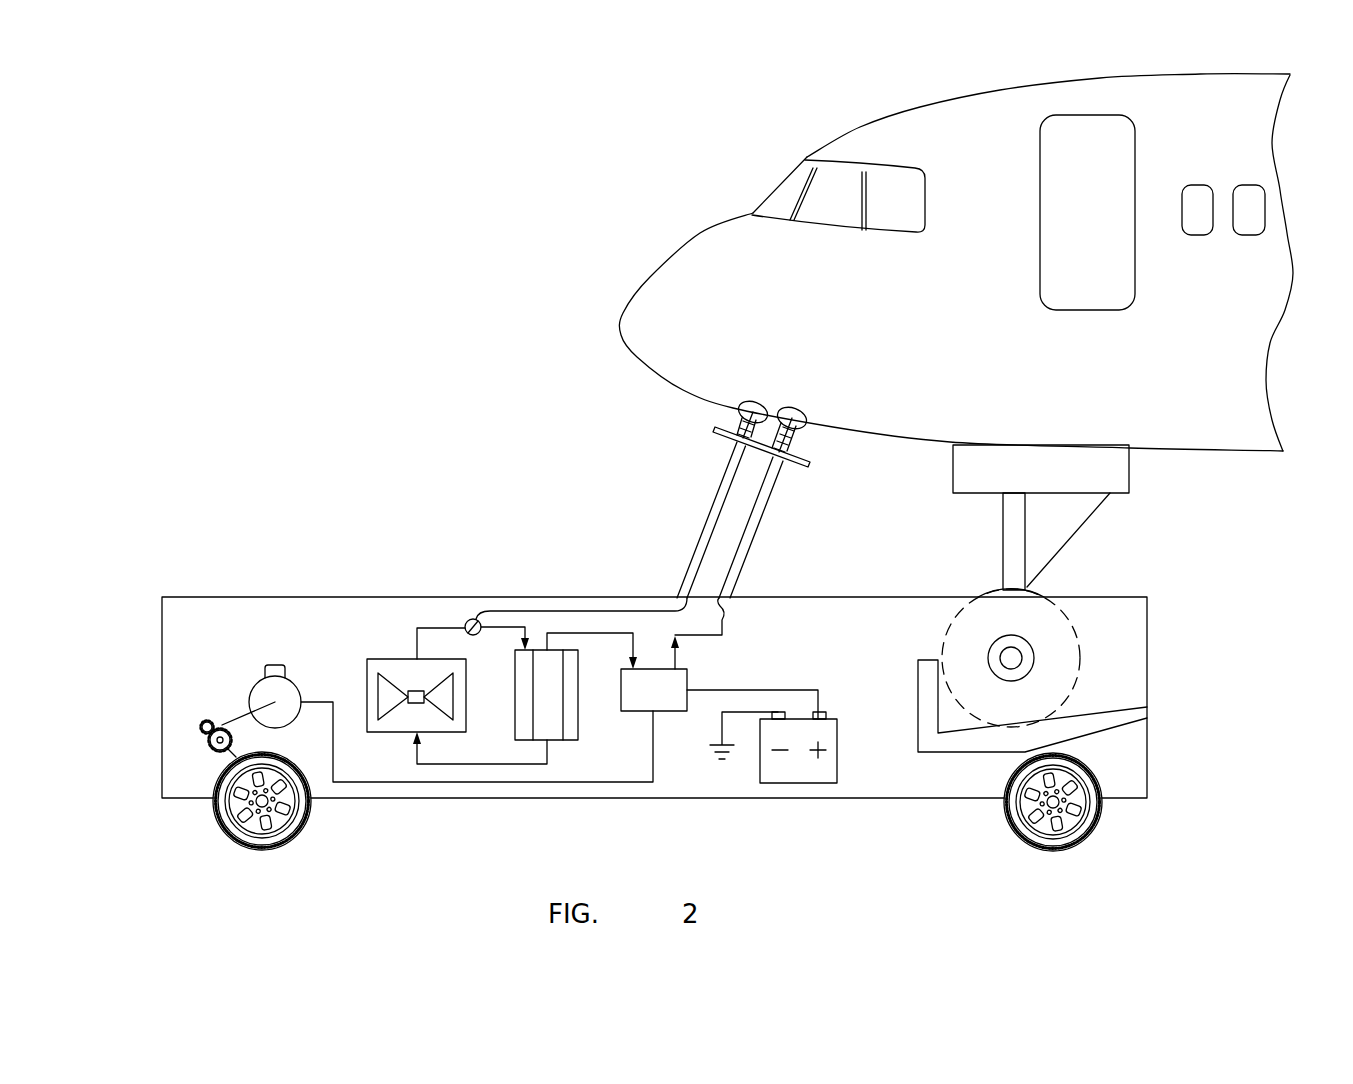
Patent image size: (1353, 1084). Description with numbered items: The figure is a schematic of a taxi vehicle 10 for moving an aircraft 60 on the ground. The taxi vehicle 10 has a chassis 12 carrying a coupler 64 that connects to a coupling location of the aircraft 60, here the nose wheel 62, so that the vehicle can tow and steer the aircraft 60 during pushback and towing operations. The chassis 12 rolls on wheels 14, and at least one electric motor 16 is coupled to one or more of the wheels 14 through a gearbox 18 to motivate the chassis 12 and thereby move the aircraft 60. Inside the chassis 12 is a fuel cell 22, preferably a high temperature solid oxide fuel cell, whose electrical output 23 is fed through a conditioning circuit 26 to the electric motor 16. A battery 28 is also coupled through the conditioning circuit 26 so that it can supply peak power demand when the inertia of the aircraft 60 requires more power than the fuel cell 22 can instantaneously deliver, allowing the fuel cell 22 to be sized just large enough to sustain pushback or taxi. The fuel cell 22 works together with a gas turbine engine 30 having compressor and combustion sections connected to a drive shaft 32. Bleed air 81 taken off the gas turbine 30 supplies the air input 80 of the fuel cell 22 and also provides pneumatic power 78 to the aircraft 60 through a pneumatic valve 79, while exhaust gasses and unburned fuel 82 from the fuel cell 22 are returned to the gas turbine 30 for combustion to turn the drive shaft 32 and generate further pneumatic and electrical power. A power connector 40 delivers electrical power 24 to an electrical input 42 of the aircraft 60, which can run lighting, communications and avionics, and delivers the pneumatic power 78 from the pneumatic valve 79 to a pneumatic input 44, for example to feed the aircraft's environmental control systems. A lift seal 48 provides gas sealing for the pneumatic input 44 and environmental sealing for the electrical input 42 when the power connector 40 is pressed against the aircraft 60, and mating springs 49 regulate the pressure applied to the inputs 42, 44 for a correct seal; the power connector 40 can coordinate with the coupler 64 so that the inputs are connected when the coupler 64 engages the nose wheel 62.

The taxi vehicle 10 is at (220, 372).
The chassis 12 is at (201, 597).
The wheels 14 is at (232, 828).
The electric motor 16 is at (262, 681).
The gearbox 18 is at (196, 750).
The fuel cell 22 is at (560, 742).
The electrical output 23 is at (607, 633).
The electrical power 24 is at (710, 638).
The conditioning circuit 26 is at (637, 712).
The battery 28 is at (803, 784).
The gas turbine engine 30 is at (380, 738).
The drive shaft 32 is at (414, 703).
The power connector 40 is at (745, 473).
The electrical input 42 is at (820, 431).
The pneumatic input 44 is at (806, 404).
The lift seal 48 is at (808, 432).
The mating springs 49 is at (798, 438).
The aircraft 60 is at (820, 150).
The nose wheel 62 is at (1037, 593).
The coupler 64 is at (927, 660).
The pneumatic power 78 is at (547, 611).
The pneumatic valve 79 is at (468, 620).
The air input 80 is at (500, 627).
The bleed air 81 is at (430, 627).
The exhaust gasses and unburned fuel 82 is at (480, 770).